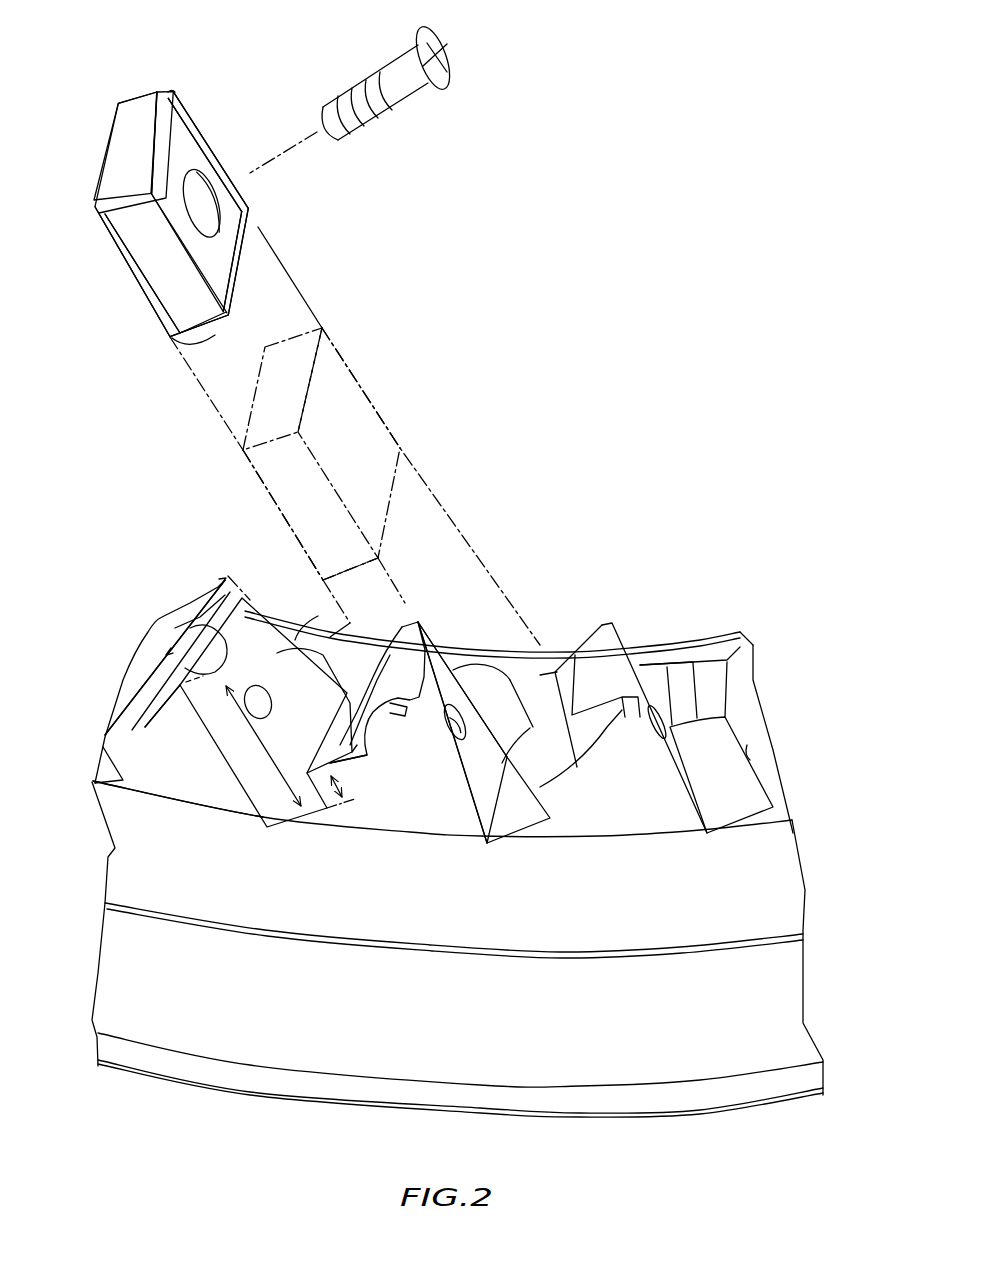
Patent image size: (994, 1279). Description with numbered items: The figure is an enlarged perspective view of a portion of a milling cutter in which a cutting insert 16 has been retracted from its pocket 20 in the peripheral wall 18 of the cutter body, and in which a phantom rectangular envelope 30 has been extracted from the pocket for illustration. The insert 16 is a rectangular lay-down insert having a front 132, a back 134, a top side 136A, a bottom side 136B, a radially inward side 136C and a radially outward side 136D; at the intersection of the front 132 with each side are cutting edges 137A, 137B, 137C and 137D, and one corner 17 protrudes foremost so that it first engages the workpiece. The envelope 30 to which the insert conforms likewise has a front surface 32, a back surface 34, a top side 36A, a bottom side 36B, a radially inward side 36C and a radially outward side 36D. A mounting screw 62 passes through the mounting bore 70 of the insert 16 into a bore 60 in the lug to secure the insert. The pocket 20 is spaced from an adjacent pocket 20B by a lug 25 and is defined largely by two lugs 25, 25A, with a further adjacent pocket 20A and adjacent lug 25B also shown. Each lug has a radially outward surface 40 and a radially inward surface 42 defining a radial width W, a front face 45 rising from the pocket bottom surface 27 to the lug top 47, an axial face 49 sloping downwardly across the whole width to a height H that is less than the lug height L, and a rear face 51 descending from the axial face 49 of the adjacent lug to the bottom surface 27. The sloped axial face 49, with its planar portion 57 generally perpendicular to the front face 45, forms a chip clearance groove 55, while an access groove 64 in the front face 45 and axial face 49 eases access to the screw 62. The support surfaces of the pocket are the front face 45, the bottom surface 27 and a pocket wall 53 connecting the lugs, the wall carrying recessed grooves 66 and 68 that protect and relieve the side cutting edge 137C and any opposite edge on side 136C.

The cutting insert 16 is at (125, 83).
The corner 17 is at (168, 90).
The peripheral wall 18 is at (208, 798).
The pocket 20 is at (483, 840).
The adjacent pocket 20A is at (732, 803).
The adjacent pocket 20B is at (265, 827).
The lug 25 is at (387, 807).
The adjacent lug 25A is at (643, 813).
The adjacent lug 25B is at (180, 773).
The bottom surface 27 is at (523, 815).
The rectangular envelope 30 is at (407, 437).
The front surface 32 is at (393, 400).
The back surface 34 is at (238, 456).
The top side 36A is at (342, 338).
The bottom side 36B is at (390, 568).
The radially inward side 36C is at (300, 298).
The radially outward side 36D is at (263, 510).
The radially outward surface 40 is at (370, 813).
The radially inward surface 42 is at (431, 623).
The front face 45 is at (468, 788).
The top 47 is at (410, 619).
The axial face 49 is at (340, 643).
The rear face 51 is at (320, 822).
The pocket wall 53 is at (510, 707).
The chip clearance groove 55 is at (583, 752).
The planar portion 57 is at (553, 770).
The bore 60 is at (448, 733).
The mounting screw 62 is at (387, 113).
The access groove 64 is at (397, 647).
The recessed groove 66 is at (473, 680).
The second recessed groove 68 is at (523, 663).
The mounting bore 70 is at (195, 208).
The front 132 is at (188, 143).
The back 134 is at (130, 275).
The top side 136A is at (132, 125).
The bottom side 136B is at (187, 350).
The radially inward side 136C is at (183, 102).
The radially outward side 136D is at (133, 230).
The cutting edge 137A is at (158, 155).
The cutting edge 137B is at (247, 250).
The cutting edge 137C is at (212, 148).
The cutting edge 137D is at (157, 302).
The radial width W is at (185, 610).
The height of the lug L is at (263, 746).
The height H is at (340, 785).